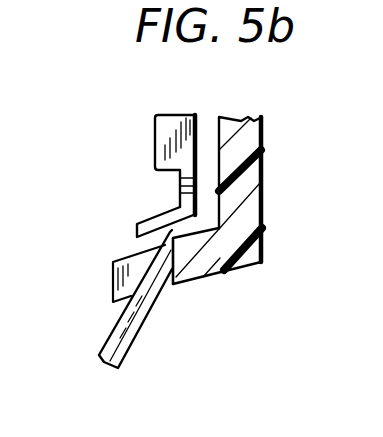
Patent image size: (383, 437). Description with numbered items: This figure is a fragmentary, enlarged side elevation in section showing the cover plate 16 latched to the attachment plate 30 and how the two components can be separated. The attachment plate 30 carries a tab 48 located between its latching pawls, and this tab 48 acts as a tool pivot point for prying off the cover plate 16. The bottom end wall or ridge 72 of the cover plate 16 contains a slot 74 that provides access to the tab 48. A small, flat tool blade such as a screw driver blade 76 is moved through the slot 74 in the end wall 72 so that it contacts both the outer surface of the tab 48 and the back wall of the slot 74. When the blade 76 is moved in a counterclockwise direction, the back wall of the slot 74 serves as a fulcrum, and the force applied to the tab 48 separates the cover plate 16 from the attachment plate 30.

The cover plate 16 is at (268, 148).
The attachment plate 30 is at (158, 130).
The tab 48 is at (135, 227).
The end wall 72 is at (197, 287).
The slot 74 is at (113, 286).
The screw driver blade 76 is at (136, 335).